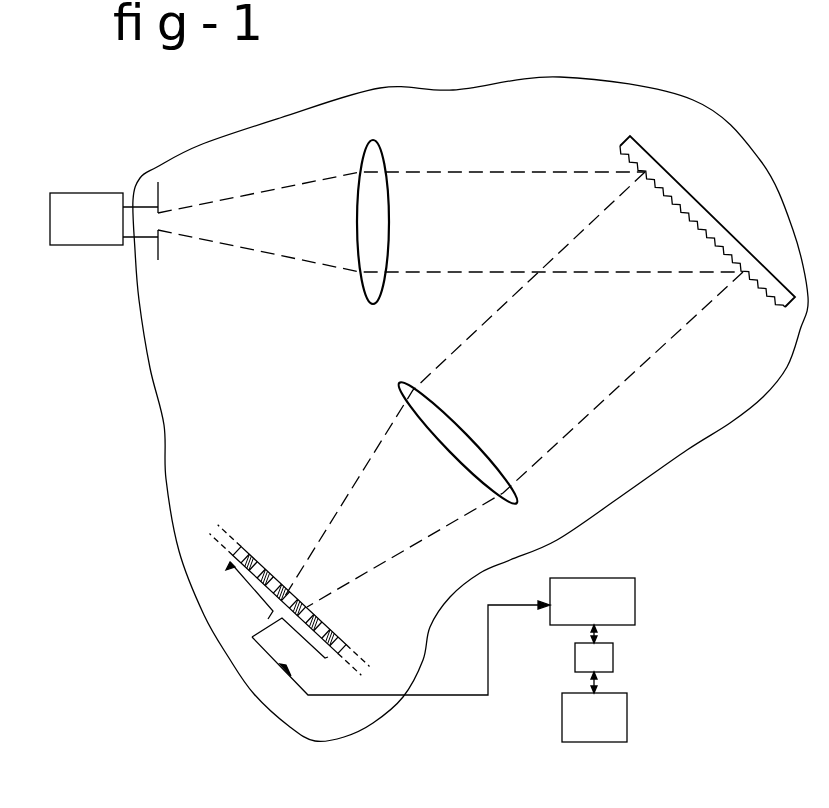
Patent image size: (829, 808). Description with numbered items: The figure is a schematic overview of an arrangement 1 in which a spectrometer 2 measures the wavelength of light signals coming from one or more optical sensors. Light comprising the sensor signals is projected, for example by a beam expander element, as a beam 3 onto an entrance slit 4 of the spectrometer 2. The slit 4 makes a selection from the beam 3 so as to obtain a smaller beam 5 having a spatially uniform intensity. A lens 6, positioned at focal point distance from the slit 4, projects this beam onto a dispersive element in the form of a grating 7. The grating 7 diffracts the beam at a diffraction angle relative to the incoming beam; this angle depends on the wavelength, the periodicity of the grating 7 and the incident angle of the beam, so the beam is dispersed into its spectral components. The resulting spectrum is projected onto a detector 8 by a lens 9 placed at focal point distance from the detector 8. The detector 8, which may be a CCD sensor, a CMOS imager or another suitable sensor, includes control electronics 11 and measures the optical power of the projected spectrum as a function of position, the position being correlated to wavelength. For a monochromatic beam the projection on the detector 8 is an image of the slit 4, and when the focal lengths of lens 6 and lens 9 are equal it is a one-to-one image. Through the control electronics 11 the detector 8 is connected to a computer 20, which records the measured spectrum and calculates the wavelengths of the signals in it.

The arrangement 1 is at (628, 75).
The spectrometer 2 is at (730, 424).
The beam 3 is at (127, 205).
The entrance slit 4 is at (157, 257).
The smaller beam 5 is at (188, 223).
The lens 6 is at (375, 153).
The grating 7 is at (713, 223).
The detector 8 is at (257, 542).
The lens 9 is at (497, 478).
The control electronics 11 is at (625, 592).
The computer 20 is at (622, 728).